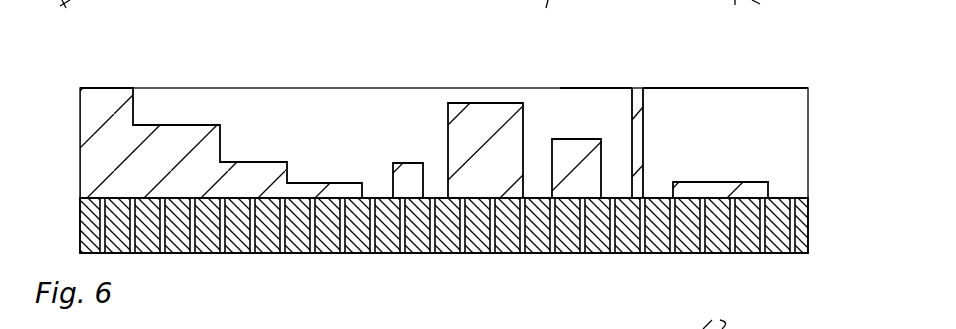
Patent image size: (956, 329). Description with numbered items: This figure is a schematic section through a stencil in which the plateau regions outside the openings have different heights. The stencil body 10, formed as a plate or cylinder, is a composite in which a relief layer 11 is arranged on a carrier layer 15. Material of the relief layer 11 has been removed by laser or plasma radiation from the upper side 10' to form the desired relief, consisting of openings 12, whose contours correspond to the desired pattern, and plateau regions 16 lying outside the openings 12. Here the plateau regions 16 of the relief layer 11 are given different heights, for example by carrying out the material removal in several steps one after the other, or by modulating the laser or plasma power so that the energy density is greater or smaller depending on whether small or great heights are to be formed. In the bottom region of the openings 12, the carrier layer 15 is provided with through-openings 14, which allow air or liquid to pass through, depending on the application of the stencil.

The stencil body 10 is at (725, 55).
The upper side 10' is at (599, 49).
The relief layer 11 is at (130, 153).
The openings 12 is at (380, 178).
The through-openings 14 is at (430, 232).
The carrier layer 15 is at (807, 236).
The plateau regions 16 is at (194, 124).